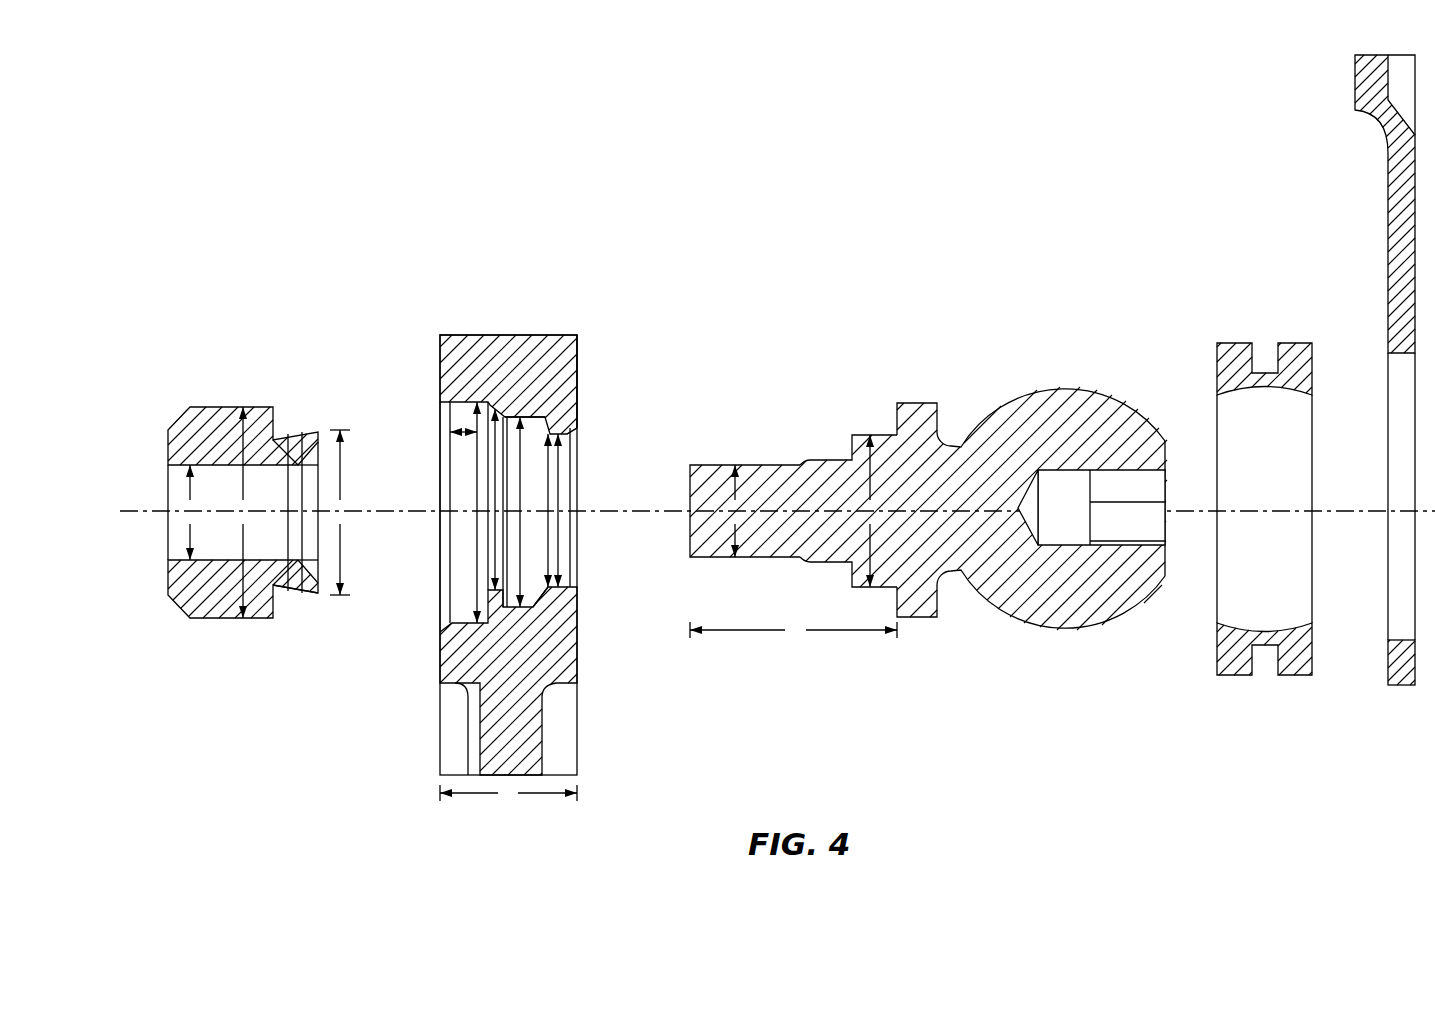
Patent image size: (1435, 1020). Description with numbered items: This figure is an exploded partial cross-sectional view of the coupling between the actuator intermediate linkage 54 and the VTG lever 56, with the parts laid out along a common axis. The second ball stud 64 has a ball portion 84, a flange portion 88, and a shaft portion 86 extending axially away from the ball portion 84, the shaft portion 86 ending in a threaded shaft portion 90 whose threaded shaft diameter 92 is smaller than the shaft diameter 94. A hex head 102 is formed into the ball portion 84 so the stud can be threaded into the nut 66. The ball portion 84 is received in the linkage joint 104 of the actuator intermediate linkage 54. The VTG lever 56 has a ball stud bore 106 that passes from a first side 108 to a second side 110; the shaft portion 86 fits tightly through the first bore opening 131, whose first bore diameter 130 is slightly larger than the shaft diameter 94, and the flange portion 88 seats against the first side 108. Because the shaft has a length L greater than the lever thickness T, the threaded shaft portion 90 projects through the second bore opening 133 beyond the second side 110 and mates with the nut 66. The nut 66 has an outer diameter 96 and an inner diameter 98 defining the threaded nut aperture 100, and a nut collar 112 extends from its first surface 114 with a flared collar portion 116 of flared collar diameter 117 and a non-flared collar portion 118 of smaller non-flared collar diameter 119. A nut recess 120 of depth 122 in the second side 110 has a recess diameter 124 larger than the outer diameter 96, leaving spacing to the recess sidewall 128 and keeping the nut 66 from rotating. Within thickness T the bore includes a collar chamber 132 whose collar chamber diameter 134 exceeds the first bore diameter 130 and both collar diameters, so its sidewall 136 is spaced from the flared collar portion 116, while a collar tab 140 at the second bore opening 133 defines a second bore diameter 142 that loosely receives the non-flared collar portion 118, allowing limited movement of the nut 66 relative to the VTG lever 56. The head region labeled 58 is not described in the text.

The actuator intermediate linkage 54 is at (1372, 55).
The VTG lever 56 is at (515, 493).
The body head portion 58 is at (445, 338).
The second ball stud 64 is at (939, 456).
The nut 66 is at (182, 427).
The ball portion 84 is at (1128, 430).
The shaft portion 86 is at (875, 434).
The flange portion 88 is at (918, 402).
The threaded shaft portion 90 is at (757, 462).
The threaded shaft diameter 92 is at (737, 511).
The shaft diameter 94 is at (870, 511).
The outer diameter 96 is at (243, 512).
The inner diameter 98 is at (190, 512).
The nut aperture 100 is at (226, 503).
The hex head 102 is at (1120, 522).
The linkage joint 104 is at (1313, 422).
The ball stud bore 106 is at (567, 535).
The first side 108 is at (578, 390).
The second side 110 is at (452, 671).
The nut collar 112 is at (290, 582).
The first surface 114 is at (285, 600).
The flared collar portion 116 is at (313, 432).
The flared collar diameter 117 is at (342, 512).
The non-flared collar portion 118 is at (285, 445).
The non-flared collar diameter 119 is at (278, 497).
The nut recess 120 is at (488, 597).
The depth 122 is at (460, 433).
The recess diameter 124 is at (472, 543).
The recess sidewall 128 is at (474, 398).
The first bore diameter 130 is at (558, 500).
The first bore opening 131 is at (578, 452).
The collar chamber 132 is at (546, 432).
The second bore opening 133 is at (437, 412).
The collar chamber diameter 134 is at (522, 475).
The sidewall 136 is at (540, 606).
The collar tab 140 is at (519, 415).
The second bore diameter 142 is at (494, 500).
The thickness T is at (508, 793).
The length L is at (793, 630).